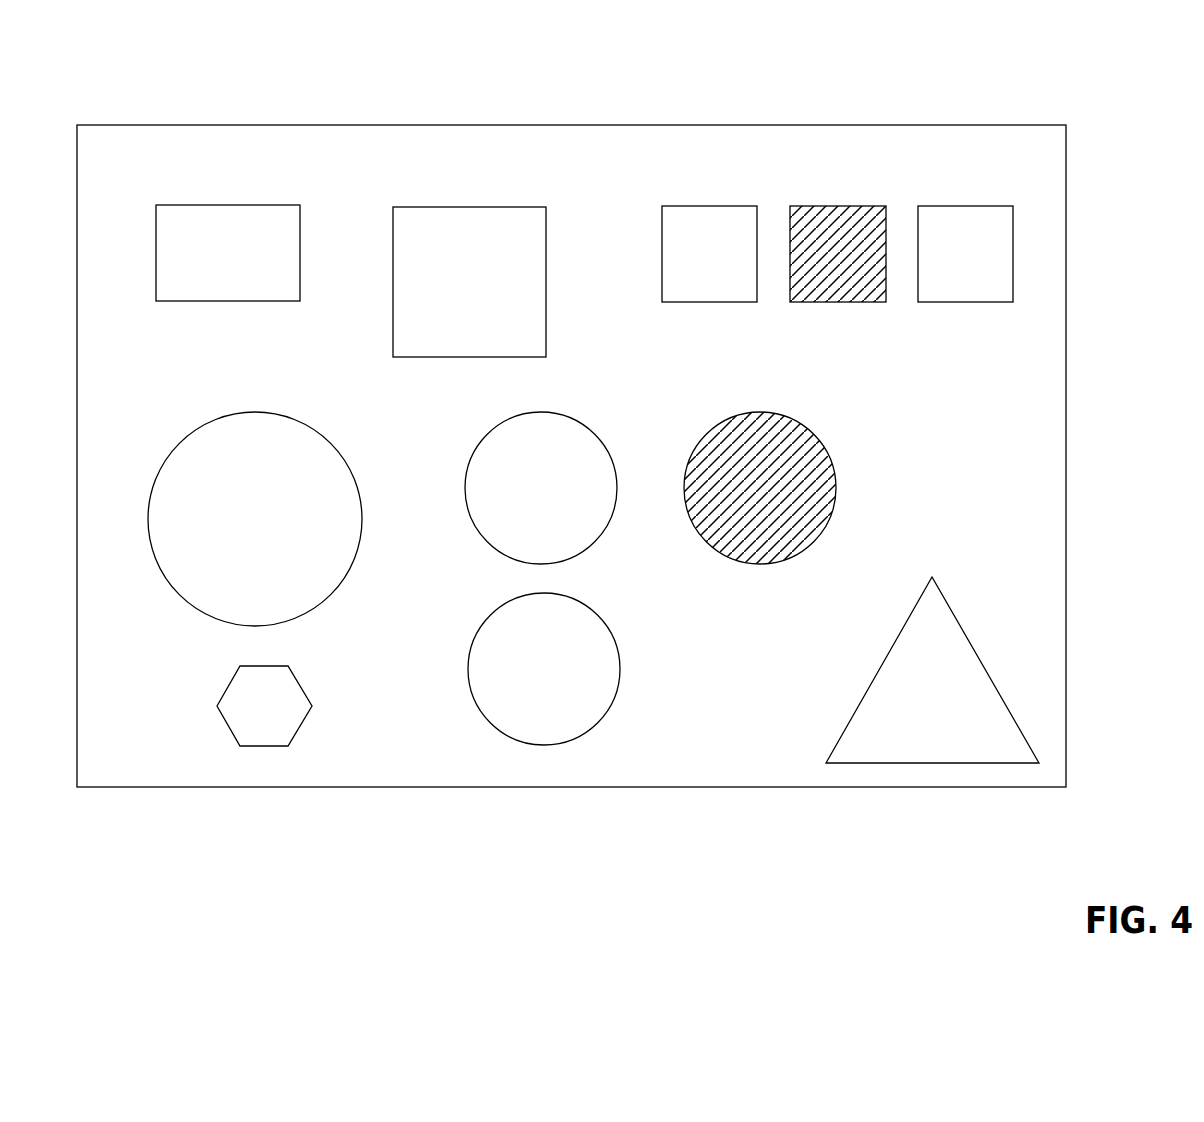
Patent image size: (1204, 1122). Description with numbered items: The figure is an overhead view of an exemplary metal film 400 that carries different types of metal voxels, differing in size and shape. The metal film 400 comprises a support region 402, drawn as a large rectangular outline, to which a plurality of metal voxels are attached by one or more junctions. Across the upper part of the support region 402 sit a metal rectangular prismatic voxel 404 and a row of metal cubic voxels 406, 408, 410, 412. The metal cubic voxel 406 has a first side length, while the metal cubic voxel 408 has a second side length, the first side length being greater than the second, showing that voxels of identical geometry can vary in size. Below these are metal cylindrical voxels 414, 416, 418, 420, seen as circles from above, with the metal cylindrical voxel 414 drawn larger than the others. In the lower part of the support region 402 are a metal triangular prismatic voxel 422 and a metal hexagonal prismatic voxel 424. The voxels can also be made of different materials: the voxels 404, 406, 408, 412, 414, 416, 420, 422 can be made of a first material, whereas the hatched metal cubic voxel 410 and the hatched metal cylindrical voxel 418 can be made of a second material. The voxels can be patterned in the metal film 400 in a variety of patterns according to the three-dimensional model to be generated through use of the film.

The metal film 400 is at (728, 44).
The support region 402 is at (167, 758).
The metal rectangular prismatic voxel 404 is at (282, 292).
The metal cubic voxel 406 is at (526, 347).
The metal cubic voxel 408 is at (745, 294).
The metal cubic voxel 410 is at (862, 288).
The metal cubic voxel 412 is at (1004, 292).
The metal cylindrical voxel 414 is at (328, 530).
The metal cylindrical voxel 416 is at (590, 516).
The metal cylindrical voxel 418 is at (808, 503).
The metal cylindrical voxel 420 is at (603, 682).
The metal triangular prismatic voxel 422 is at (986, 742).
The metal hexagonal prismatic voxel 424 is at (291, 729).